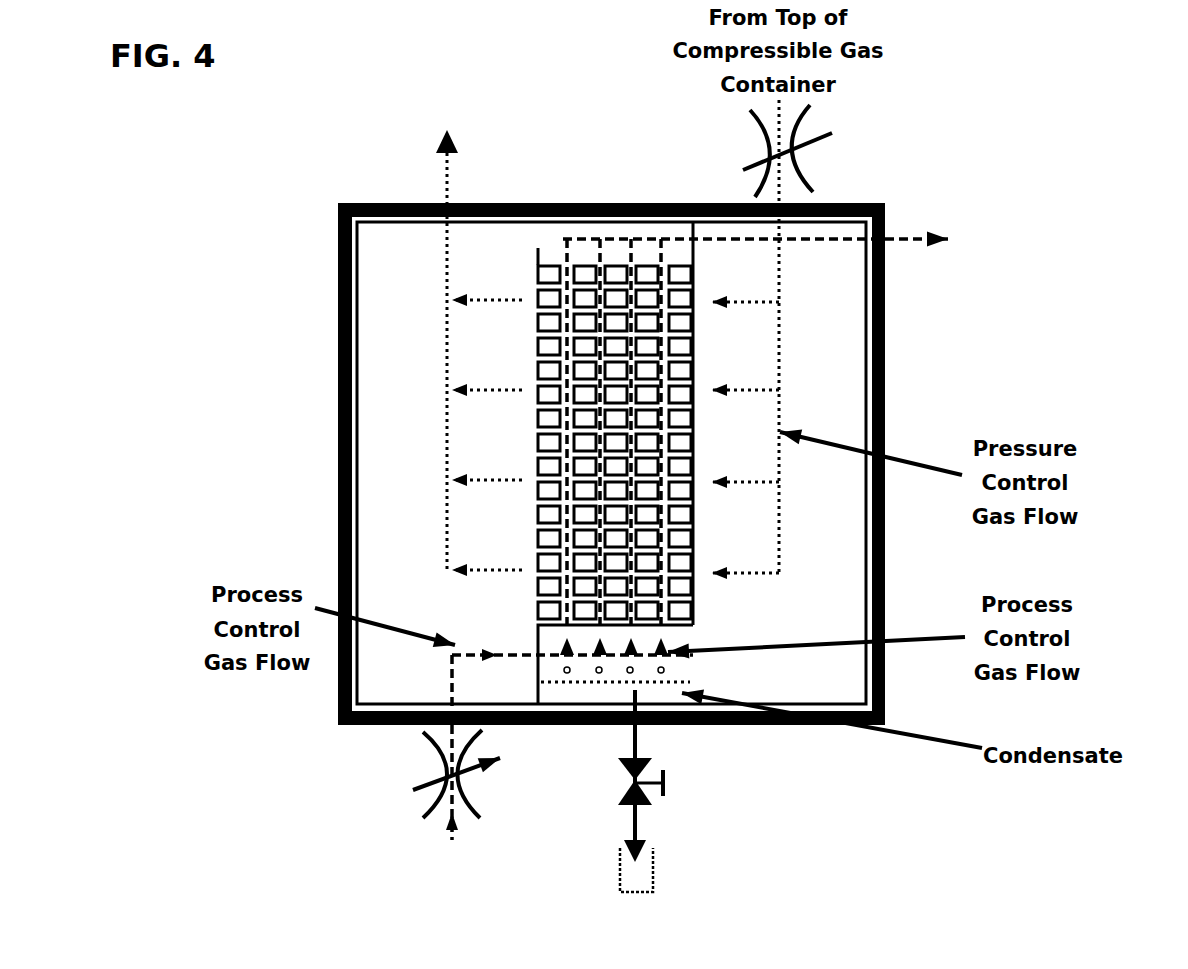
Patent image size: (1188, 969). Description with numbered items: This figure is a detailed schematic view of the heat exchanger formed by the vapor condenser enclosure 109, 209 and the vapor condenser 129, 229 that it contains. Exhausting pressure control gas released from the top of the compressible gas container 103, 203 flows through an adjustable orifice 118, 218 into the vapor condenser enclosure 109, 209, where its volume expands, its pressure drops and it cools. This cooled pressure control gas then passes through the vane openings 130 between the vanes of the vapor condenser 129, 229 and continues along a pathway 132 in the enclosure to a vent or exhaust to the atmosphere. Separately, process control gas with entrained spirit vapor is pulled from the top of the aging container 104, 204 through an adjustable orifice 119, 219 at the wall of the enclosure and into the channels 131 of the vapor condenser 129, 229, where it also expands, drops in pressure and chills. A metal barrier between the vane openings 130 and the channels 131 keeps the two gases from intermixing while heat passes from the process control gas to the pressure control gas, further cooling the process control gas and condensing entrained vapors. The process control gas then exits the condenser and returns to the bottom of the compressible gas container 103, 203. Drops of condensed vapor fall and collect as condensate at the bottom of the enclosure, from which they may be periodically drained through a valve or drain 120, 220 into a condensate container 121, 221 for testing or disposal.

The vapor condenser enclosure 109 is at (513, 430).
The vapor condenser enclosure 209 is at (335, 260).
The vapor condenser 129 is at (417, 471).
The vapor condenser 229 is at (537, 445).
The channels 131 is at (560, 262).
The pathway 132 is at (445, 460).
The vane openings 130 is at (700, 318).
The adjustable orifice 118 is at (718, 151).
The adjustable orifice 218 is at (770, 150).
The adjustable orifice 119 is at (384, 774).
The adjustable orifice 219 is at (435, 768).
The compressible gas container 103 is at (862, 293).
The compressible gas container 203 is at (862, 293).
The aging container 104 is at (450, 792).
The aging container 204 is at (450, 792).
The valve or drain 120 is at (722, 776).
The valve or drain 220 is at (722, 776).
The condensate container 121 is at (688, 877).
The condensate container 221 is at (688, 877).